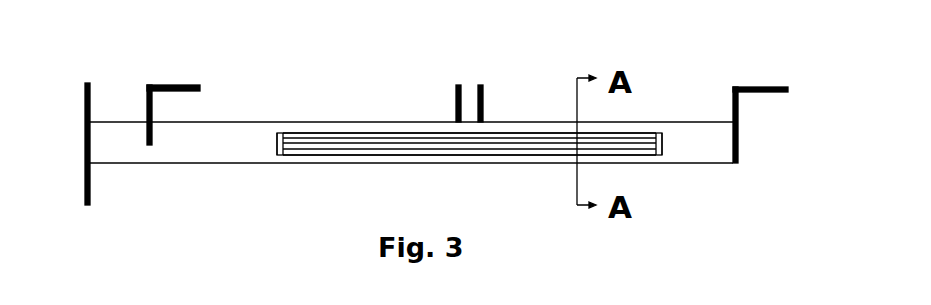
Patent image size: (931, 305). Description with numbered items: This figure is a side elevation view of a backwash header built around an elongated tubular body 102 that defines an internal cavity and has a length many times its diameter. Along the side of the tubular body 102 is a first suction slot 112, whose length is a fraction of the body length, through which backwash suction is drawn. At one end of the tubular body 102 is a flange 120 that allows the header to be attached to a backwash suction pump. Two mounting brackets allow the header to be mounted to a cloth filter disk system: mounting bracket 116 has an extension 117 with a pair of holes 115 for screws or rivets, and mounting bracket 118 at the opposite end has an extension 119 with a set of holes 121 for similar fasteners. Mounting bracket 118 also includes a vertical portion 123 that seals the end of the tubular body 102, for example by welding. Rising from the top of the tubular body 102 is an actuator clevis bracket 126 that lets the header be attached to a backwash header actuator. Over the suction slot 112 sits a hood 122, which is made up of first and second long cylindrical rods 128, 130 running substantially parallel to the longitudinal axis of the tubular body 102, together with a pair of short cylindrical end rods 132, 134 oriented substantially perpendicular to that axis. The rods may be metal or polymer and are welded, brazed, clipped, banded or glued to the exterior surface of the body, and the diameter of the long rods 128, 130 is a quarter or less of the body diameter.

The tubular body 102 is at (650, 122).
The first suction slot 112 is at (403, 148).
The holes 115 is at (180, 85).
The mounting bracket 116 is at (193, 86).
The extension 117 is at (163, 84).
The mounting bracket 118 is at (785, 87).
The extension 119 is at (747, 87).
The flange 120 is at (92, 183).
The holes 121 is at (765, 87).
The hood 122 is at (477, 147).
The vertical portion 123 is at (741, 150).
The actuator clevis bracket 126 is at (459, 87).
The first long cylindrical rod 128 is at (357, 156).
The second long cylindrical rod 130 is at (330, 133).
The short cylindrical end rod 132 is at (277, 147).
The short cylindrical end rod 134 is at (663, 150).